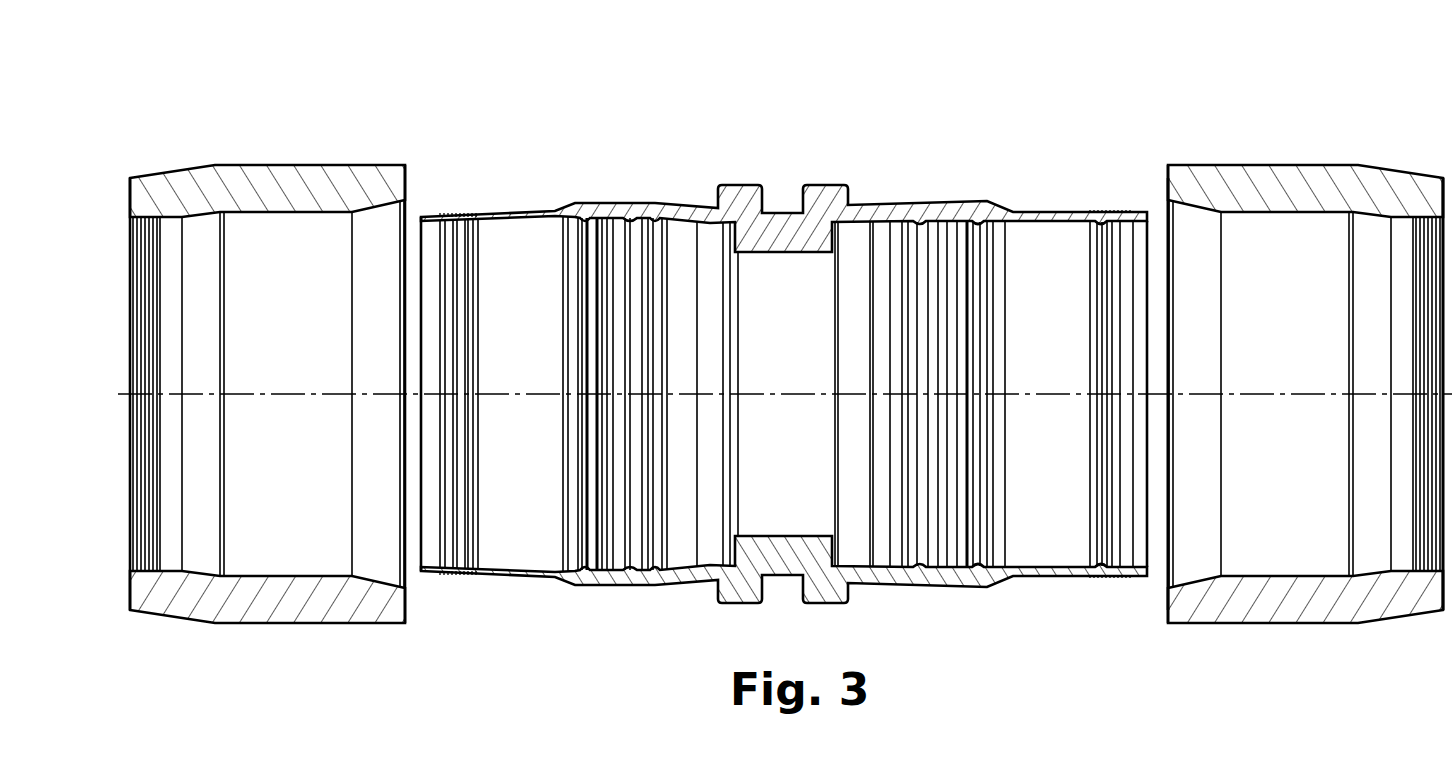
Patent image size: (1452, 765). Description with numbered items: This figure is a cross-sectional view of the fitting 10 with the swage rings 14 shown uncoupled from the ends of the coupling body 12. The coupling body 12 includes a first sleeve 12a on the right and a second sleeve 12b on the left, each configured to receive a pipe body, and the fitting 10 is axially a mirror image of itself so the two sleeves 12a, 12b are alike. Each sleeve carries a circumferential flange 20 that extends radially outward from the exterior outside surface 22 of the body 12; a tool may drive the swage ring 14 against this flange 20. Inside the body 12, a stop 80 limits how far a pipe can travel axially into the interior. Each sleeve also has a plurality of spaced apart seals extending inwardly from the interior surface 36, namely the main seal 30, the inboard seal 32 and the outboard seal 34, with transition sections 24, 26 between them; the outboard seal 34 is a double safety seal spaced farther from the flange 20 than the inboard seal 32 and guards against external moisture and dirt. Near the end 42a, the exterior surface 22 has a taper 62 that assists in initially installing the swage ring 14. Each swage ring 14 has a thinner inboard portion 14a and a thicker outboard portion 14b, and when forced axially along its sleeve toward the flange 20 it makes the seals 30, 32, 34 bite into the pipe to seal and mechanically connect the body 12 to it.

The fitting 10 is at (1003, 93).
The coupling body 12 is at (895, 212).
The first sleeve 12a is at (1095, 186).
The second sleeve 12b is at (478, 192).
The swage ring 14 is at (282, 190).
The inboard portion 14a is at (1163, 188).
The outboard portion 14b is at (1440, 202).
The circumferential flange 20 is at (740, 192).
The exterior outside surface 22 is at (962, 203).
The transition section 24 is at (963, 256).
The transition section 26 is at (1095, 553).
The main seal 30 is at (963, 238).
The inboard seal 32 is at (918, 235).
The outboard seal 34 is at (1110, 231).
The interior surface 36 is at (888, 224).
The end 42a is at (1137, 575).
The taper 62 is at (1146, 215).
The stop 80 is at (833, 237).